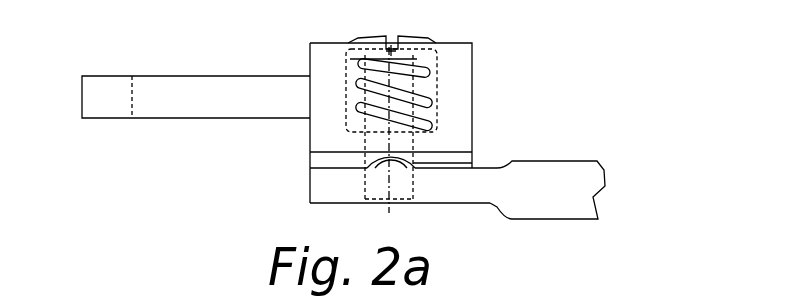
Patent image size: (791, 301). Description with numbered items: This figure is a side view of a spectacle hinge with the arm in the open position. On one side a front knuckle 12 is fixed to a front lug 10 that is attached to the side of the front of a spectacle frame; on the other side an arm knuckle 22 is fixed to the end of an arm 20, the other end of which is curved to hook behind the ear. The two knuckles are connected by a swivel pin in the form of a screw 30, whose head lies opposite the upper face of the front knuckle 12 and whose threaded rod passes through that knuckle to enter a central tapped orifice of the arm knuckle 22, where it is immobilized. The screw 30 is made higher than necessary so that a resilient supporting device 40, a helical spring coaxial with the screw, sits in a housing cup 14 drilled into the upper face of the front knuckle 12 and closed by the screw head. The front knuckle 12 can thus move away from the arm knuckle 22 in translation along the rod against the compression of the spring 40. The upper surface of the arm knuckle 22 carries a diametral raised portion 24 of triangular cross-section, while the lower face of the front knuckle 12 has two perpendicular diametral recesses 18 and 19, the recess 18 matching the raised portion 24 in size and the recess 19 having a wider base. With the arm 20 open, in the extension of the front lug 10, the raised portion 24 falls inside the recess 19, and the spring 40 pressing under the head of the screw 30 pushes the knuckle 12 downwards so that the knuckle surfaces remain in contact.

The front lug 10 is at (202, 95).
The front knuckle 12 is at (298, 50).
The housing cup 14 is at (435, 112).
The recess 18 is at (453, 153).
The recess 19 is at (413, 152).
The arm 20 is at (528, 183).
The arm knuckle 22 is at (297, 184).
The raised portion 24 is at (403, 170).
The screw 30 is at (364, 37).
The resilient supporting device 40 is at (406, 95).